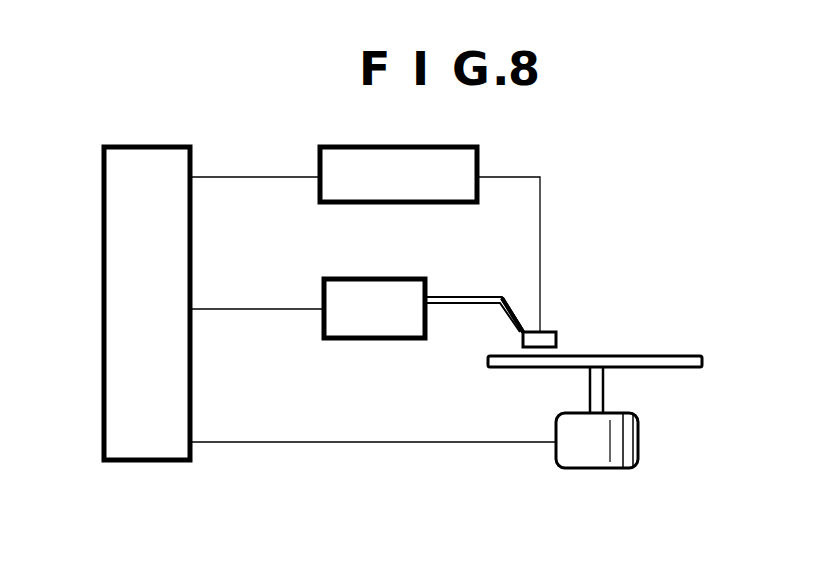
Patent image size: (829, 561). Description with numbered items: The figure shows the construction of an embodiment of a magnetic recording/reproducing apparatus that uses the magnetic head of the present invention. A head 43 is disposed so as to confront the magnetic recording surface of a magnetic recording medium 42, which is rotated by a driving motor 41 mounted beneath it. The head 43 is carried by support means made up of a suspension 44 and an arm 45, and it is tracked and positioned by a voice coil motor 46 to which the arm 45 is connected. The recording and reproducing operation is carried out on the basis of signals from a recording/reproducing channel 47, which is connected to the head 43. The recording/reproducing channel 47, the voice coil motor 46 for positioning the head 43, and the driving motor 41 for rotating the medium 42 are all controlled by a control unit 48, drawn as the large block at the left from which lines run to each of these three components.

The driving motor 41 is at (625, 445).
The magnetic recording medium 42 is at (680, 358).
The head 43 is at (556, 333).
The suspension 44 is at (513, 310).
The arm 45 is at (462, 305).
The voice coil motor 46 is at (387, 330).
The recording/reproducing channel 47 is at (425, 158).
The control unit 48 is at (172, 154).